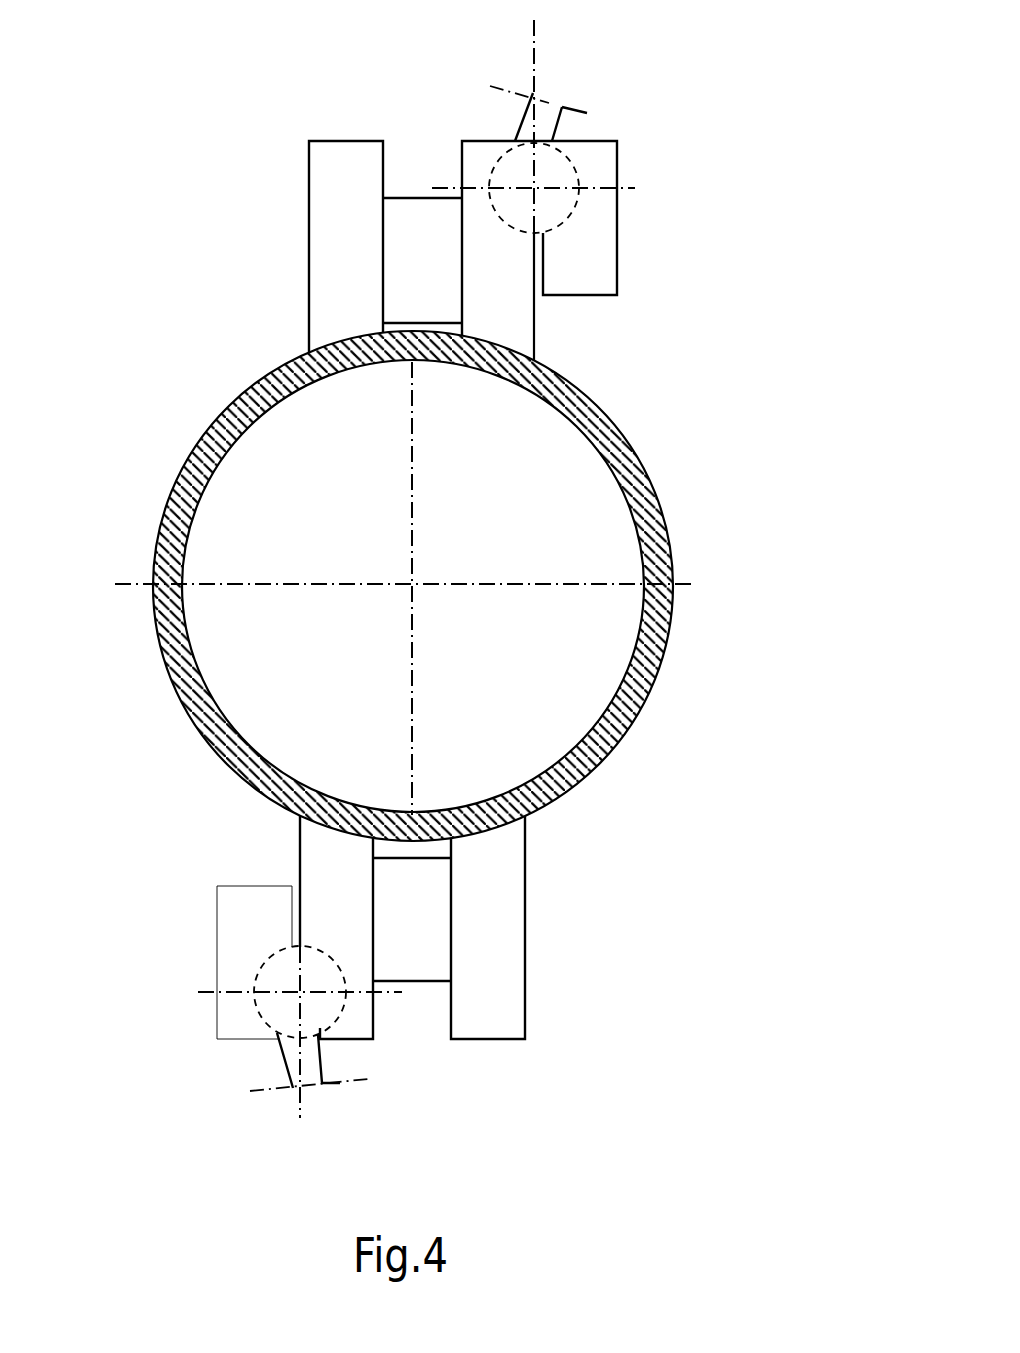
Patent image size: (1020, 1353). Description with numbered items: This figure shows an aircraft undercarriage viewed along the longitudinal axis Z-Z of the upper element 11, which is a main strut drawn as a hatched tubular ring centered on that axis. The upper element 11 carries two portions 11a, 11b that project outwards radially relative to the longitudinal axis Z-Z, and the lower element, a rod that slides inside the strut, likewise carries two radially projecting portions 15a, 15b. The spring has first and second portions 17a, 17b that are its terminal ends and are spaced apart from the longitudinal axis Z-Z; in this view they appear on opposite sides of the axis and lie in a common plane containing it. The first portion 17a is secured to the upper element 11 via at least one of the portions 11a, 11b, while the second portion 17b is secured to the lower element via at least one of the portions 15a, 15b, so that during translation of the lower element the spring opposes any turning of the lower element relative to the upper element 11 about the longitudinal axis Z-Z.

The upper element 11 is at (548, 805).
The first projecting portion of the upper element 11a is at (313, 858).
The second projecting portion of the upper element 11b is at (525, 928).
The first projecting portion of the lower element 15a is at (525, 313).
The second projecting portion of the lower element 15b is at (340, 258).
The first portion of the spring 17a is at (283, 1055).
The second portion of the spring 17b is at (552, 121).
The longitudinal axis Z-Z is at (420, 584).